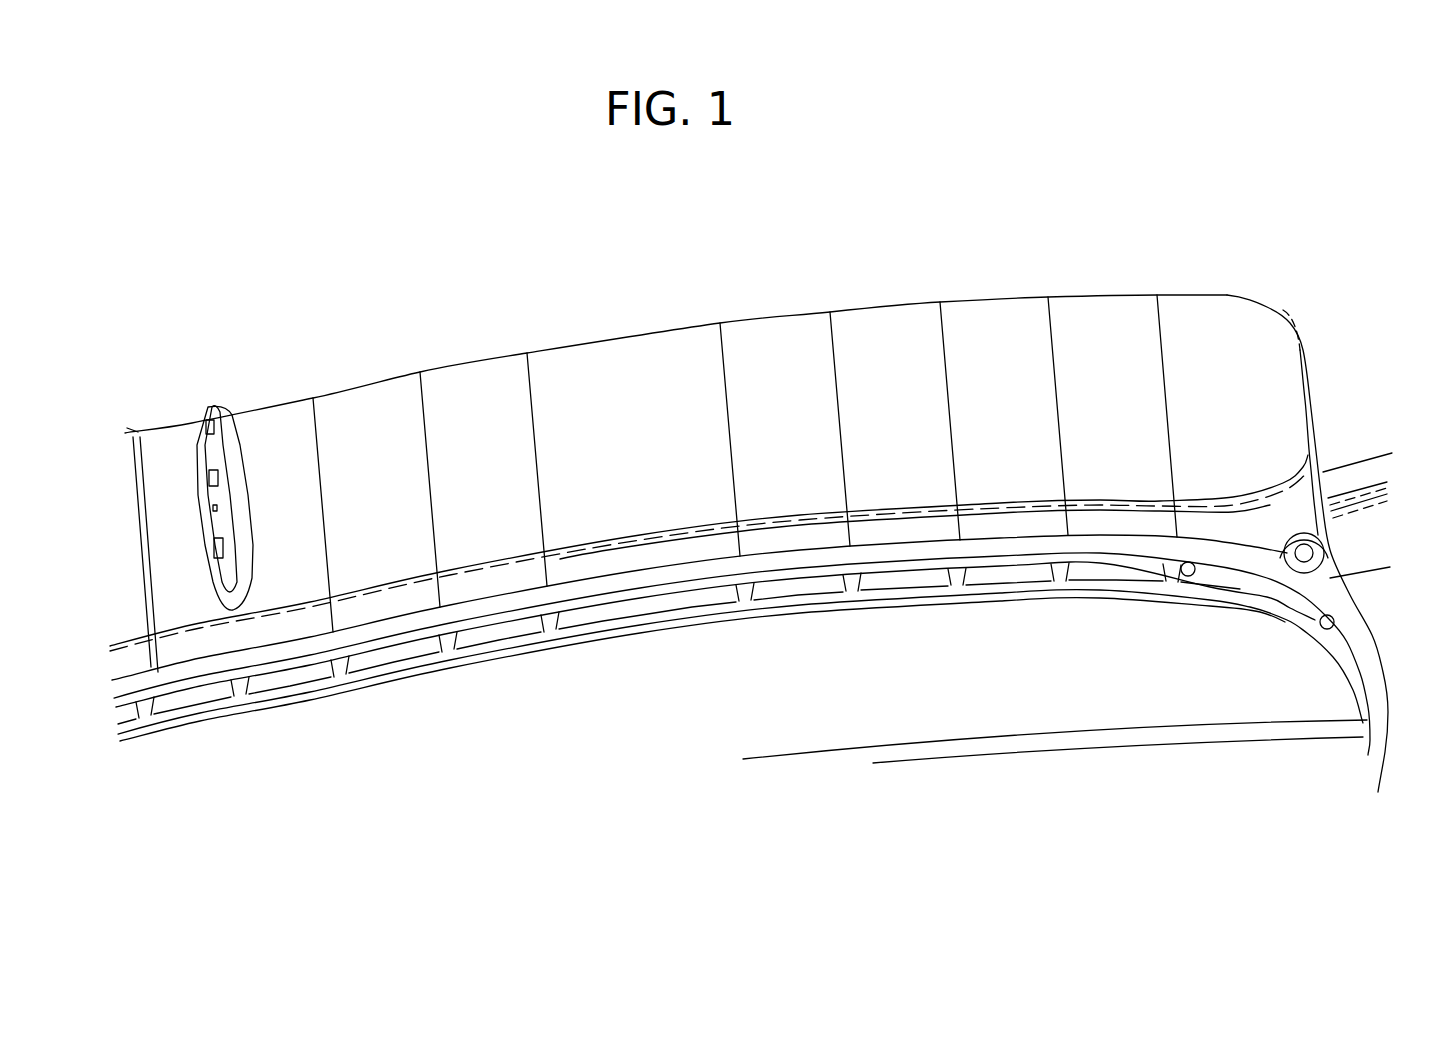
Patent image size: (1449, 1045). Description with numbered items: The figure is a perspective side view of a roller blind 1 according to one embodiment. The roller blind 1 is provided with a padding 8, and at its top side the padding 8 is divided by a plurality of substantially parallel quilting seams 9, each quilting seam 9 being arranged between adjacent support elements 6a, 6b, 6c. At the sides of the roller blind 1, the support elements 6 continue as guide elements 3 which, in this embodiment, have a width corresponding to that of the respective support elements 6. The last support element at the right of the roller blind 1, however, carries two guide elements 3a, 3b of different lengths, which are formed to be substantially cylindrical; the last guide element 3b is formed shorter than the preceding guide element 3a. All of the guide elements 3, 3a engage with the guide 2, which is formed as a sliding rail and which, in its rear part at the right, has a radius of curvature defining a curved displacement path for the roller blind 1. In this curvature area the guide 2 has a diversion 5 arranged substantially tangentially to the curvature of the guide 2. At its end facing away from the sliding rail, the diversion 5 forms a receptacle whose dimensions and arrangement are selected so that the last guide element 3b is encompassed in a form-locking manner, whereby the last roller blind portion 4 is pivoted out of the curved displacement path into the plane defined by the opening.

The roller blind 1 is at (671, 262).
The guide 2 is at (757, 618).
The guide elements 3 is at (440, 648).
The guide element 3a is at (1188, 576).
The last guide element 3b is at (1303, 574).
The last roller blind portion 4 is at (1243, 334).
The diversion 5 is at (1330, 528).
The support elements 6 is at (679, 652).
The support element 6a is at (798, 444).
The support element 6b is at (907, 436).
The support element 6c is at (1018, 426).
The padding 8 is at (590, 357).
The quilting seams 9 is at (1051, 325).